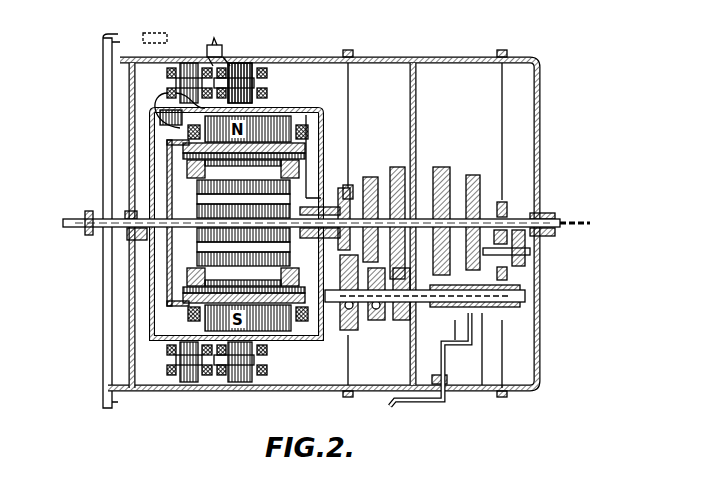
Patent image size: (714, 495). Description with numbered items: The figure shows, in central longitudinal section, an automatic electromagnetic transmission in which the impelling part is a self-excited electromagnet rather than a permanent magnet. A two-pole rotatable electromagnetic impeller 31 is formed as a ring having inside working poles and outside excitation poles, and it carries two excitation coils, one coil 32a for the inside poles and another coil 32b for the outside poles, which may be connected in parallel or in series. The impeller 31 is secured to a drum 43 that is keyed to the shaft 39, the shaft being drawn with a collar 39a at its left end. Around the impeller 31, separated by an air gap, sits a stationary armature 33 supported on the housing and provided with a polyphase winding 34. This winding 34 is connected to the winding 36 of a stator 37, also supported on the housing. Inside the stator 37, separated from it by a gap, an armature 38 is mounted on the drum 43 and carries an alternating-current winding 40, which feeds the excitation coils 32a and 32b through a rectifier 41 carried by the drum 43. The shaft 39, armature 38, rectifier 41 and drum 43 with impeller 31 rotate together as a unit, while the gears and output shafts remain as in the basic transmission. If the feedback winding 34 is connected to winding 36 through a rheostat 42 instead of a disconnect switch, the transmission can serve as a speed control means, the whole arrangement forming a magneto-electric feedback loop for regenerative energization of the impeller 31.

The rotatable electromagnetic impeller 31 is at (266, 86).
The excitation coil for inside poles 32a is at (321, 125).
The excitation coil for outside poles 32b is at (260, 93).
The stationary armature 33 is at (240, 67).
The polyphase winding 34 is at (263, 71).
The stator winding 36 is at (168, 73).
The stator 37 is at (186, 70).
The armature 38 is at (170, 343).
The shaft 39 is at (125, 230).
The shaft collar 39a is at (80, 212).
The alternating-current winding 40 is at (167, 355).
The rectifier 41 is at (152, 130).
The rheostat 42 is at (168, 55).
The drum 43 is at (150, 260).